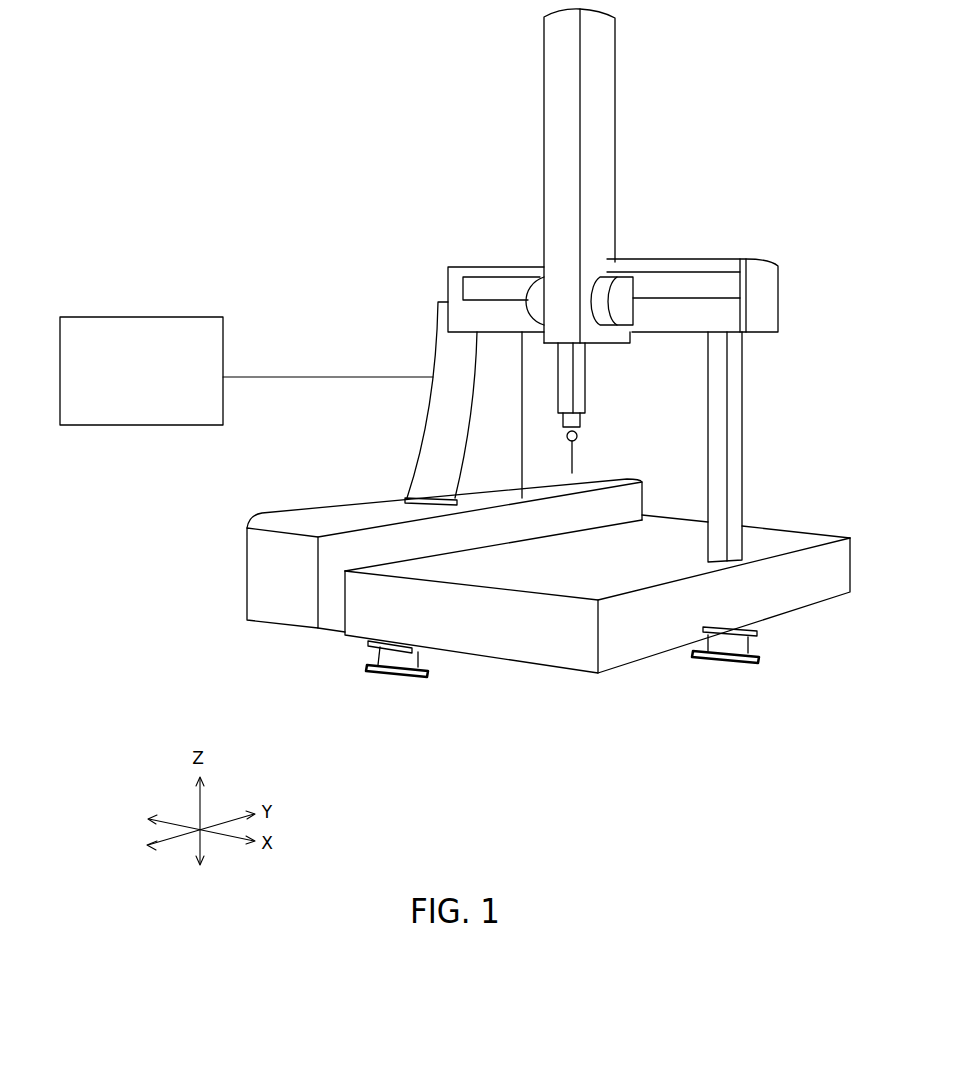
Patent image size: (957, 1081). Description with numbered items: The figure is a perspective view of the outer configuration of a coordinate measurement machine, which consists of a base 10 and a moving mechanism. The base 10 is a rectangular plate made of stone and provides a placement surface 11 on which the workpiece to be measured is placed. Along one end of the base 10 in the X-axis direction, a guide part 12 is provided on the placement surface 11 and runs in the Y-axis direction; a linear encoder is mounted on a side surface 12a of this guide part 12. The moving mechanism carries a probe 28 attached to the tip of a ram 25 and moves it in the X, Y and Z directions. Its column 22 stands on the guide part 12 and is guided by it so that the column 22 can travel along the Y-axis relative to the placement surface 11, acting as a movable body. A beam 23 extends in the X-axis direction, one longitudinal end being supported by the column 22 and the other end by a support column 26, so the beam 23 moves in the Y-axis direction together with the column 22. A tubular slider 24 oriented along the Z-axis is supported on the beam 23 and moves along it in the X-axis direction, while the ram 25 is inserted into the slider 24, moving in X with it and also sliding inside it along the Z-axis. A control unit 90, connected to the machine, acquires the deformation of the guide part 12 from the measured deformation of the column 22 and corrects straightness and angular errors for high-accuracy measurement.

The base 10 is at (477, 640).
The placement surface 11 is at (657, 518).
The guide part 12 is at (413, 548).
The side surface of the guide part 12a is at (247, 542).
The column 22 is at (429, 434).
The beam 23 is at (487, 264).
The slider 24 is at (618, 171).
The ram 25 is at (587, 378).
The support column 26 is at (742, 429).
The probe 28 is at (580, 437).
The control unit 90 is at (206, 316).